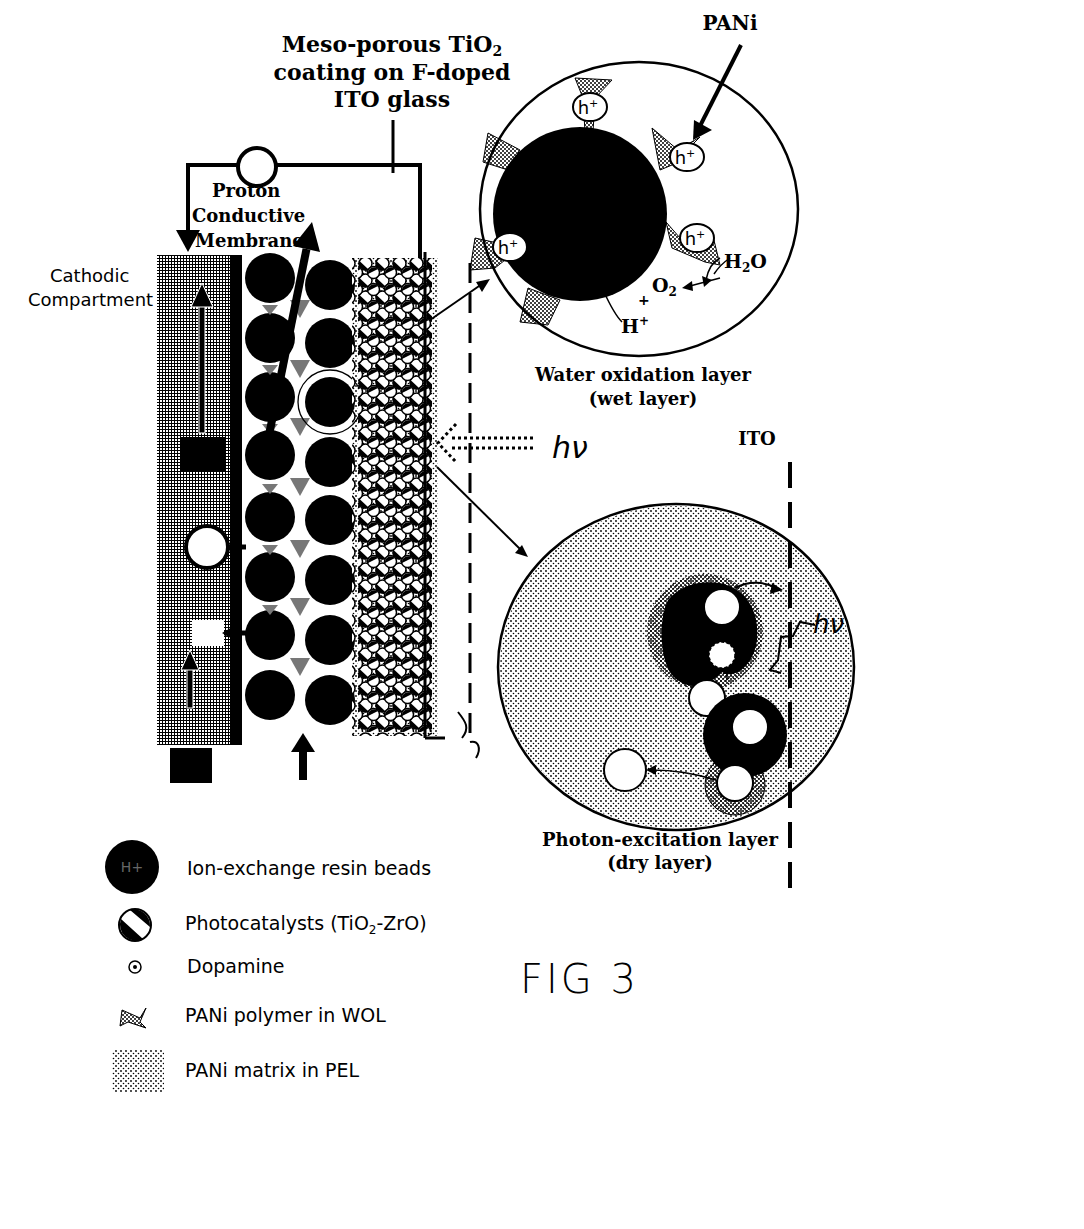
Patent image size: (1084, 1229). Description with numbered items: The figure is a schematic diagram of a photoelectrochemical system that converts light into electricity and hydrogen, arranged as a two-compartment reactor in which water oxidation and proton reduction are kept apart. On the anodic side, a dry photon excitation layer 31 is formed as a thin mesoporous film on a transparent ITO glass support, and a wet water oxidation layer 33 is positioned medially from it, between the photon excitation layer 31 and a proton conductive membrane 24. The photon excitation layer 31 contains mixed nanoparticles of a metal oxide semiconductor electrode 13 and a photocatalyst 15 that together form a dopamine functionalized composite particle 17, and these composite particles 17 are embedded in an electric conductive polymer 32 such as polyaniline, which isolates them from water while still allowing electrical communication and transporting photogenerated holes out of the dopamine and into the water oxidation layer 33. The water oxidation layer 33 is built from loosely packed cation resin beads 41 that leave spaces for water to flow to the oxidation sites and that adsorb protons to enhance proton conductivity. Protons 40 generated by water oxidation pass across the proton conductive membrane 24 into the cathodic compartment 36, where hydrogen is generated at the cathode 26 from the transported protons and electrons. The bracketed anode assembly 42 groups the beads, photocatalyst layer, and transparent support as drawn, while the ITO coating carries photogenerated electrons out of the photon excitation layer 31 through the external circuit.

The cathodic compartment 36 is at (235, 150).
The water oxidation layer 33 is at (357, 232).
The photon excitation layer 31 is at (462, 253).
The electric conductive polymer 32 is at (505, 148).
The resin beads 41 is at (282, 722).
The protons 40 is at (600, 222).
The cathode 26 is at (175, 505).
The proton conductive membrane 24 is at (240, 740).
The photoanode assembly 42 is at (458, 812).
The surface-modified nano structured photocatalyst 13 is at (785, 708).
The photocatalyst 15 is at (762, 808).
The composite particle 17 is at (778, 672).